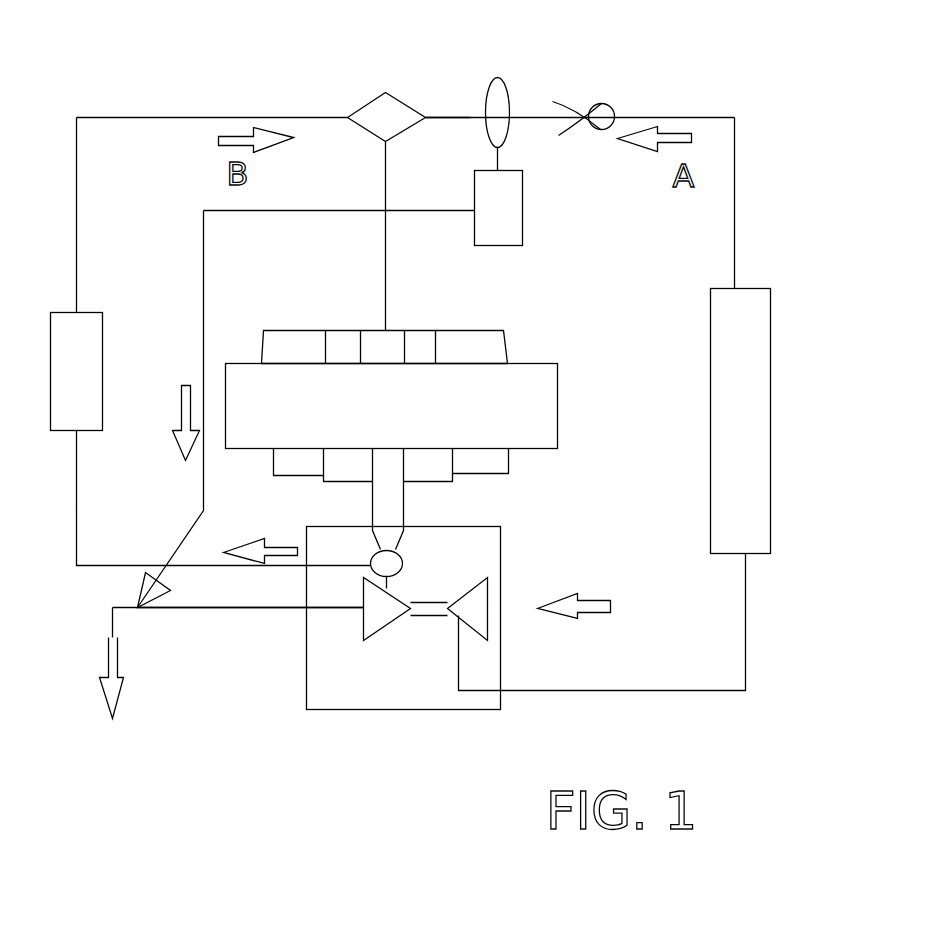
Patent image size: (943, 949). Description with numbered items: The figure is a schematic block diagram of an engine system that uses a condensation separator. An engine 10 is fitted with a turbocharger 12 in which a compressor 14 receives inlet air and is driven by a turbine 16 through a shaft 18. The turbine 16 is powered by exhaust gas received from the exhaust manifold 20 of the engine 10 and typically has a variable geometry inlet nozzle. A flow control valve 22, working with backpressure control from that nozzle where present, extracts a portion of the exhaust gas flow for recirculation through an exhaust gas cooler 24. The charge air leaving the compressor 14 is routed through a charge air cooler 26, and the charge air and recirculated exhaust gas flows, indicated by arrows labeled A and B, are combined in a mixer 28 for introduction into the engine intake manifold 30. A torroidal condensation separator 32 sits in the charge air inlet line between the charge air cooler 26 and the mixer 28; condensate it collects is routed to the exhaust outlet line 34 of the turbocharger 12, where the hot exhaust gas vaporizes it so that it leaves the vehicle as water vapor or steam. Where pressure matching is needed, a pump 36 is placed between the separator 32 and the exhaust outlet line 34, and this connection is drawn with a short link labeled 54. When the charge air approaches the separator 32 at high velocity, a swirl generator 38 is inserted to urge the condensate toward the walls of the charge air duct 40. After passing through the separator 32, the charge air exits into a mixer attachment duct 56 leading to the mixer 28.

The engine 10 is at (513, 407).
The turbocharger 12 is at (303, 662).
The compressor 14 is at (472, 610).
The turbine 16 is at (378, 612).
The shaft 18 is at (425, 617).
The exhaust manifold 20 is at (490, 473).
The flow control valve 22 is at (402, 560).
The exhaust gas cooler 24 is at (105, 352).
The charge air cooler 26 is at (770, 428).
The mixer 28 is at (363, 108).
The intake manifold 30 is at (497, 329).
The torroidal condensation separator 32 is at (507, 85).
The exhaust outlet line 34 is at (230, 612).
The pump 36 is at (523, 210).
The swirl generator 38 is at (603, 101).
The charge air duct 40 is at (733, 149).
The connection line 54 is at (497, 160).
The mixer attachment duct 56 is at (450, 115).